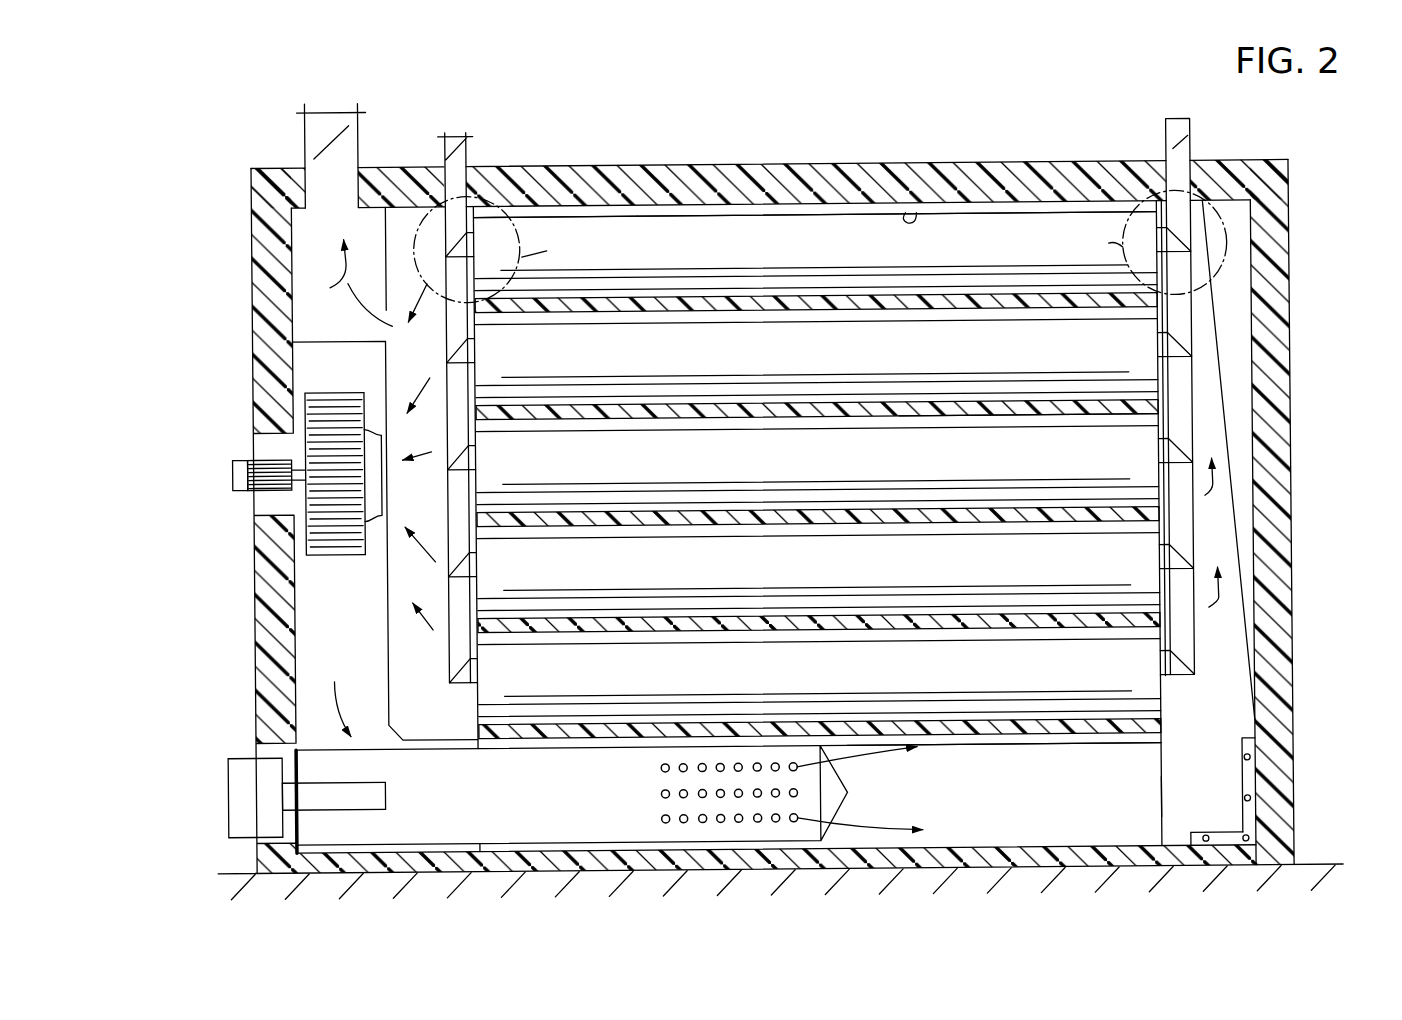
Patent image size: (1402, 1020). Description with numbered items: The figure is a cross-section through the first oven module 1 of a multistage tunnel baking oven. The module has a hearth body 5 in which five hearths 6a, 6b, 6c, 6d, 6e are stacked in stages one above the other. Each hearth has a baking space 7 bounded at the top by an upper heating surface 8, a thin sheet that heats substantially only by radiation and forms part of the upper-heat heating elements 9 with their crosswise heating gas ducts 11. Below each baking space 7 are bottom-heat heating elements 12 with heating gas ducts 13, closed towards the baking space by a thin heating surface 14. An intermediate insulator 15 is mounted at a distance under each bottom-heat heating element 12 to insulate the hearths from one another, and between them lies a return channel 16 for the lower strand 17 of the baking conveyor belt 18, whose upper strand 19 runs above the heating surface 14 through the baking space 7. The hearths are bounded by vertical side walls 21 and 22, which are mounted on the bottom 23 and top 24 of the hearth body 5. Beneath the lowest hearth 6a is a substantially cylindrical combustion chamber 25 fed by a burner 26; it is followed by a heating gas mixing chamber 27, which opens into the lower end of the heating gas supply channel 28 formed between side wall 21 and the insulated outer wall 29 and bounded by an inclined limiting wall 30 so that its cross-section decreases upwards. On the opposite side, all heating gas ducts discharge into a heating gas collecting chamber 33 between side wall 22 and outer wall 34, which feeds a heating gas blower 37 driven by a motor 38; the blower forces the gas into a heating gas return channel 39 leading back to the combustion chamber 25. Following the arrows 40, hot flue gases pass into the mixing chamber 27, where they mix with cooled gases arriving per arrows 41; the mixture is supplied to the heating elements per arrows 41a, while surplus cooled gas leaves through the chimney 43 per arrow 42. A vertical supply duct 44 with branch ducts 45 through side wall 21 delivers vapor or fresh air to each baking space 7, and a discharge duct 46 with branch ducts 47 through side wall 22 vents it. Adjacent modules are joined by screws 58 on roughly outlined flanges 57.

The oven module 1 is at (701, 163).
The hearth body 5 is at (1162, 708).
The hearth 6a is at (1092, 664).
The hearth 6b is at (1087, 560).
The hearth 6c is at (1108, 450).
The hearth 6d is at (921, 386).
The hearth 6e is at (1081, 243).
The baking space 7 is at (804, 257).
The upper heating surface 8 is at (919, 214).
The upper-heat heating element 9 is at (817, 211).
The heating gas duct 11 is at (984, 216).
The bottom-heat heating element 12 is at (911, 389).
The heating gas duct 13 is at (979, 386).
The heating surface 14 is at (1049, 383).
The intermediate insulator 15 is at (945, 410).
The return channel 16 is at (493, 401).
The lower strand 17 is at (578, 402).
The baking conveyor belt 18 is at (634, 376).
The upper strand 19 is at (701, 375).
The side wall 21 is at (1161, 801).
The side wall 22 is at (470, 697).
The bottom 23 is at (1092, 849).
The top 24 is at (518, 205).
The combustion chamber 25 is at (536, 820).
The burner 26 is at (268, 793).
The heating gas mixing chamber 27 is at (997, 801).
The heating gas supply channel 28 is at (1215, 763).
The outer wall 29 is at (1285, 487).
The limiting wall 30 is at (1222, 379).
The heating gas collecting chamber 33 is at (402, 226).
The outer wall 34 is at (254, 281).
The heating gas blower 37 is at (330, 420).
The motor 38 is at (233, 466).
The heating gas return channel 39 is at (346, 613).
The arrows of flow direction 40 is at (866, 828).
The arrows of flow direction 41 is at (349, 705).
The arrows of flow direction 41a is at (1212, 549).
The arrow of flow direction 42 is at (331, 281).
The chimney 43 is at (308, 124).
The supply duct 44 is at (1183, 130).
The branch duct 45 is at (1172, 245).
The discharge duct 46 is at (457, 146).
The branch duct 47 is at (469, 243).
The flange 57 is at (1246, 786).
The screw 58 is at (1244, 842).